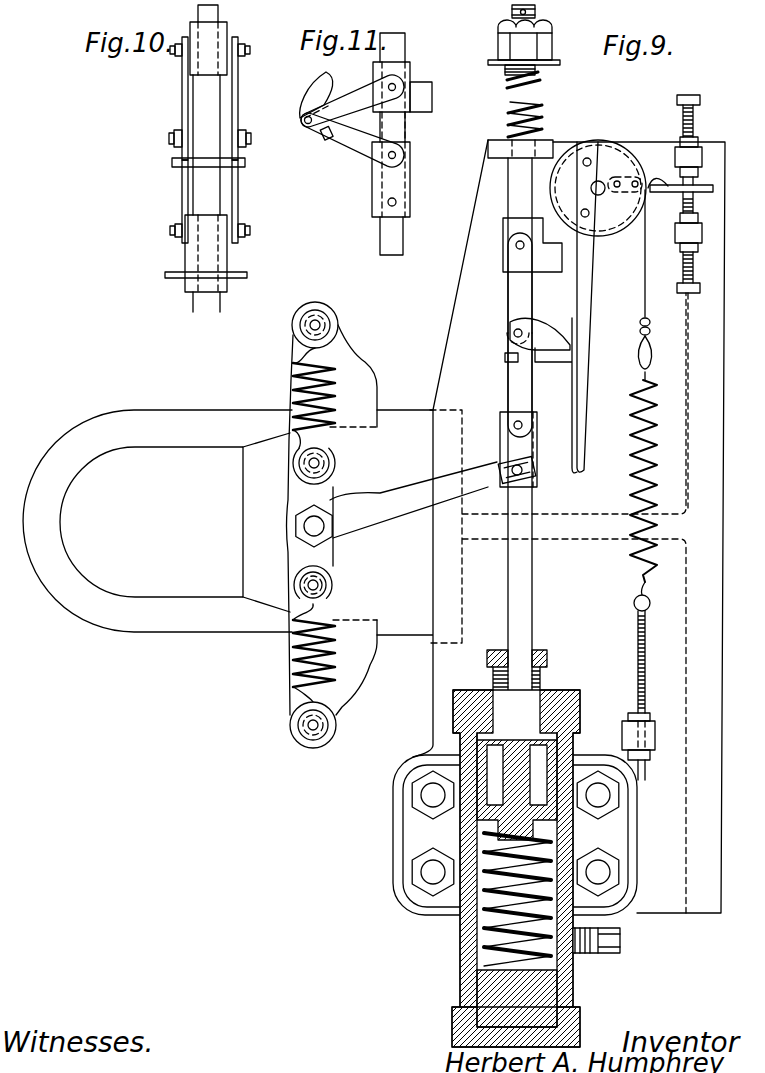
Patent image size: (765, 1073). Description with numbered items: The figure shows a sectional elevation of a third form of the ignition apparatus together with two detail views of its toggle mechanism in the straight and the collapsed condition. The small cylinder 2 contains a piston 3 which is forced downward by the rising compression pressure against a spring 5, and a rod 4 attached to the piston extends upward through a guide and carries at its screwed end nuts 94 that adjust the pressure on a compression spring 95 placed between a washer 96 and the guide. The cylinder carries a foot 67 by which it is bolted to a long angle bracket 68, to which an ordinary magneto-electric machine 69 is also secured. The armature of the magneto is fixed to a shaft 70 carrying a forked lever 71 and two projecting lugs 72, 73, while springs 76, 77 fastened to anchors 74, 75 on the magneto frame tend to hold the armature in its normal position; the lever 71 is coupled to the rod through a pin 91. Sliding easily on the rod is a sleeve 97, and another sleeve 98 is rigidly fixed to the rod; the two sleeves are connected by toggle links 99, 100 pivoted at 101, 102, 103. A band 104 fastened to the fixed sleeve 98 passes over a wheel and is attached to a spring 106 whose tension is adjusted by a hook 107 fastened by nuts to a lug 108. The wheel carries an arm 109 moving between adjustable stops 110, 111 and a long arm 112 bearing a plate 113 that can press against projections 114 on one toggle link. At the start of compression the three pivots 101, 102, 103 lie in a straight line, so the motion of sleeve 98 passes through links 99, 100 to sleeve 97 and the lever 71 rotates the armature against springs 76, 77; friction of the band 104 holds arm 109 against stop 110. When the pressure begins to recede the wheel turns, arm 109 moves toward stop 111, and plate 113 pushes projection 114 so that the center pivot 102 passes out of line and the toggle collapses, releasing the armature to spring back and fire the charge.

In FIG. 9, the small cylinder 2 is at (572, 838).
In FIG. 9, the piston 3 is at (500, 775).
In FIG. 10, the rod 4 is at (212, 300).
In FIG. 11, the rod 4 is at (400, 237).
In FIG. 9, the rod 4 is at (520, 445).
In FIG. 9, the spring 5 is at (470, 930).
In FIG. 9, the foot 67 is at (515, 835).
In FIG. 9, the angle bracket 68 is at (551, 526).
In FIG. 9, the magneto-electric machine 69 is at (252, 505).
In FIG. 9, the shaft 70 is at (325, 530).
In FIG. 9, the forked lever 71 is at (413, 500).
In FIG. 9, the projecting lug 72 is at (322, 463).
In FIG. 9, the projecting lug 73 is at (327, 585).
In FIG. 9, the anchor 74 is at (328, 324).
In FIG. 9, the anchor 75 is at (323, 725).
In FIG. 9, the spring 76 is at (325, 398).
In FIG. 9, the spring 77 is at (325, 640).
In FIG. 9, the pin 91 is at (517, 470).
In FIG. 9, the nuts 94 is at (546, 44).
In FIG. 9, the compression spring 95 is at (542, 126).
In FIG. 9, the washer 96 is at (553, 64).
In FIG. 9, the sliding sleeve 97 is at (512, 452).
In FIG. 9, the fixed sleeve 98 is at (503, 247).
In FIG. 10, the toggle link 99 is at (182, 192).
In FIG. 11, the toggle link 99 is at (352, 140).
In FIG. 9, the toggle link 99 is at (518, 381).
In FIG. 10, the toggle link 100 is at (182, 98).
In FIG. 11, the toggle link 100 is at (362, 108).
In FIG. 9, the toggle link 100 is at (513, 283).
In FIG. 10, the pivot 101 is at (243, 237).
In FIG. 11, the pivot 101 is at (396, 155).
In FIG. 9, the pivot 101 is at (513, 424).
In FIG. 10, the center pivot 102 is at (244, 142).
In FIG. 11, the center pivot 102 is at (333, 118).
In FIG. 9, the center pivot 102 is at (512, 333).
In FIG. 10, the pivot 103 is at (245, 50).
In FIG. 11, the pivot 103 is at (389, 85).
In FIG. 9, the pivot 103 is at (503, 213).
In FIG. 9, the band 104 is at (643, 268).
In FIG. 9, the spring 106 is at (652, 470).
In FIG. 9, the hook 107 is at (646, 632).
In FIG. 9, the lug 108 is at (655, 736).
In FIG. 9, the arm 109 is at (665, 184).
In FIG. 9, the adjustable stop 110 is at (690, 143).
In FIG. 9, the adjustable stop 111 is at (683, 203).
In FIG. 9, the long arm 112 is at (590, 366).
In FIG. 9, the plate 113 is at (572, 372).
In FIG. 11, the projections 114 is at (326, 80).
In FIG. 9, the projections 114 is at (540, 334).